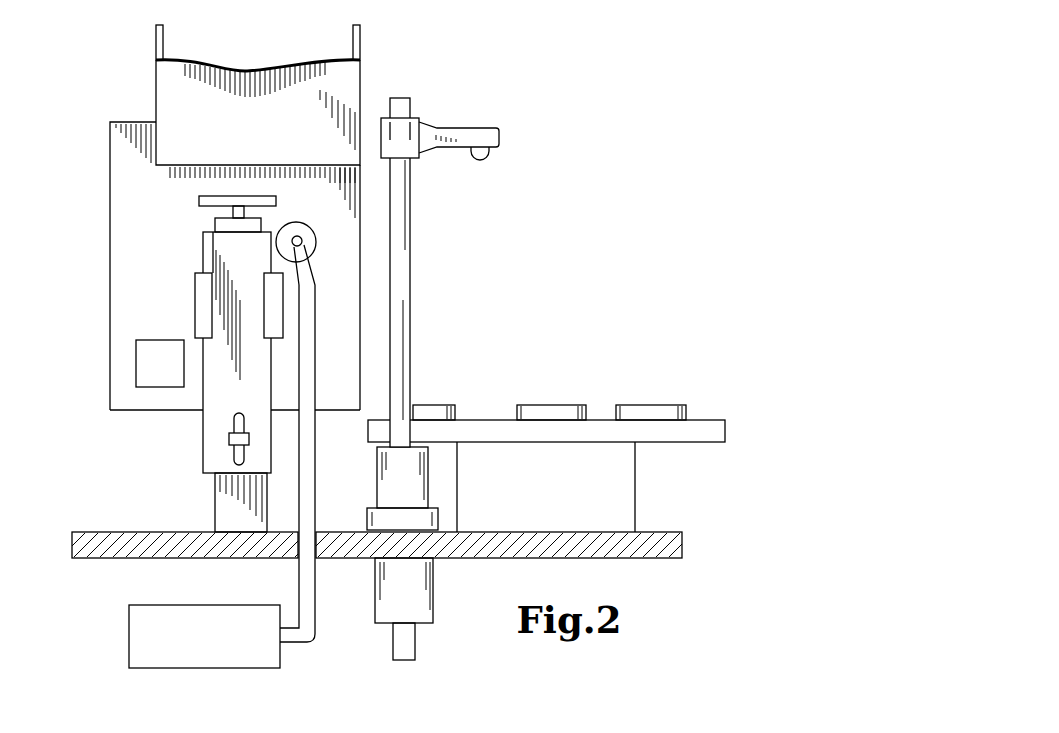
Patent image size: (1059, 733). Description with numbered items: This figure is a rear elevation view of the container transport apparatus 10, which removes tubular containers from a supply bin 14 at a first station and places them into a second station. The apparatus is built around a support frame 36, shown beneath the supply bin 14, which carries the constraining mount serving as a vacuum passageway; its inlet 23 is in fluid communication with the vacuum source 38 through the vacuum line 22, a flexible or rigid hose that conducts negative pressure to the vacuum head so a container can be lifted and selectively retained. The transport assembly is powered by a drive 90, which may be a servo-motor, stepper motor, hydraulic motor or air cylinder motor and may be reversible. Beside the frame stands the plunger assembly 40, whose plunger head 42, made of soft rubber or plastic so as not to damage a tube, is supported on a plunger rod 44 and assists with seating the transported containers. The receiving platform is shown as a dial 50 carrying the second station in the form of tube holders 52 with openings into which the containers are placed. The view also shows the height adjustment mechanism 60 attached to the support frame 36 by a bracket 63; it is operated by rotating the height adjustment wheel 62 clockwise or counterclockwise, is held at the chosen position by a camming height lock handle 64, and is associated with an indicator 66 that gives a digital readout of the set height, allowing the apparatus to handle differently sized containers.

The container transport apparatus 10 is at (612, 76).
The supply bin 14 is at (196, 138).
The vacuum line 22 is at (313, 364).
The inlet 23 is at (302, 241).
The support frame 36 is at (299, 206).
The vacuum source 38 is at (203, 688).
The plunger assembly 40 is at (500, 105).
The plunger head 42 is at (488, 157).
The plunger rod 44 is at (402, 286).
The dial 50 is at (655, 345).
The tube holders 52 is at (440, 410).
The height adjustment mechanism 60 is at (170, 250).
The height adjustment wheel 62 is at (199, 200).
The bracket 63 is at (198, 300).
The camming height lock handle 64 is at (232, 432).
The indicator 66 is at (222, 226).
The drive 90 is at (148, 363).